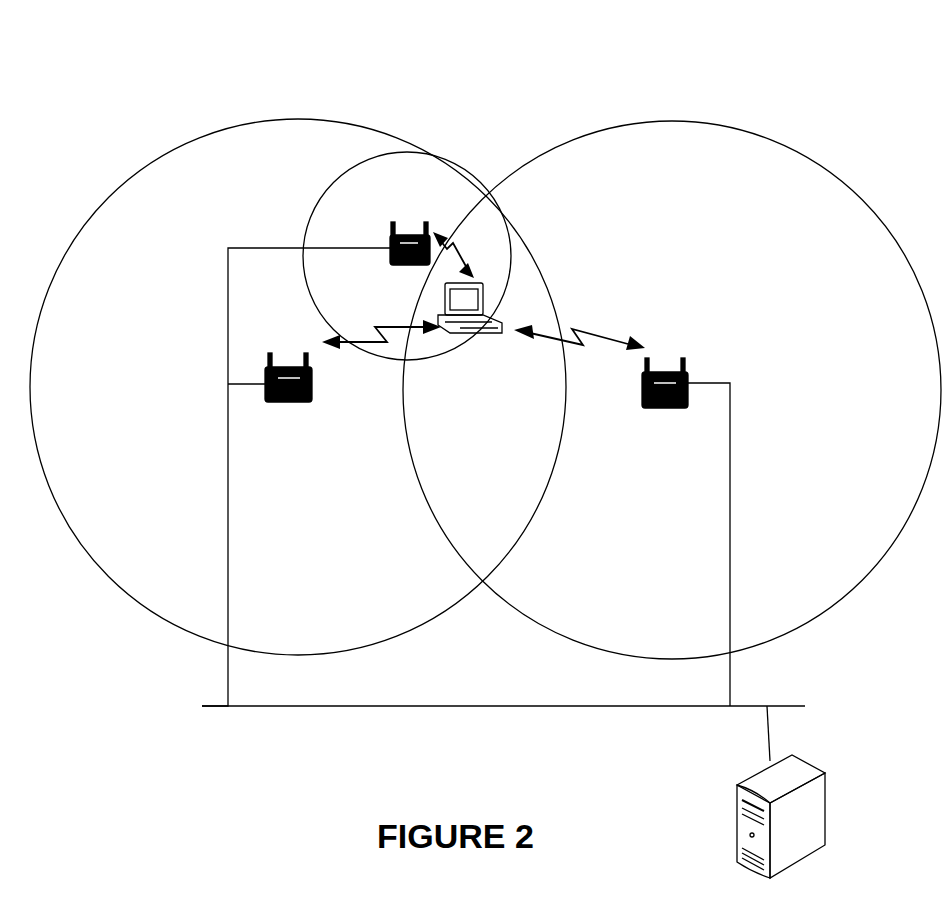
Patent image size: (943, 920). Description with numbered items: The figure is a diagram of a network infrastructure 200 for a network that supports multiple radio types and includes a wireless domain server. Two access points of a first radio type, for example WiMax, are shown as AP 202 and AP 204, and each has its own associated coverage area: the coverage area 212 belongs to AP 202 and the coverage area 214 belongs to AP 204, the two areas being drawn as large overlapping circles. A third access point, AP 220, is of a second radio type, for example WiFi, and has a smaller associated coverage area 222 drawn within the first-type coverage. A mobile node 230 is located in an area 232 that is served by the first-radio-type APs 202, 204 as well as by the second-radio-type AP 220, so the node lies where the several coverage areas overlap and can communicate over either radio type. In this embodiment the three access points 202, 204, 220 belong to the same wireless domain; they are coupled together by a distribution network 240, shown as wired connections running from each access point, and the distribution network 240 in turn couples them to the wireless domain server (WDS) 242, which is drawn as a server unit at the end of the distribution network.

The network infrastructure 200 is at (452, 58).
The access point 202 is at (312, 390).
The access point 204 is at (642, 398).
The coverage area 212 is at (298, 119).
The coverage area 214 is at (672, 122).
The access point 220 is at (392, 264).
The coverage area 222 is at (306, 228).
The mobile node 230 is at (500, 334).
The area 232 is at (503, 240).
The distribution network 240 is at (500, 706).
The wireless domain server 242 is at (825, 820).